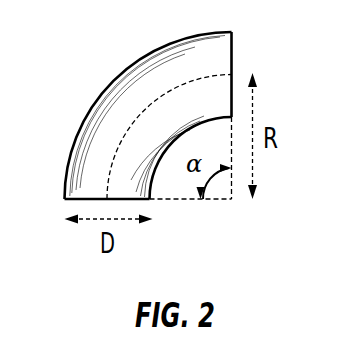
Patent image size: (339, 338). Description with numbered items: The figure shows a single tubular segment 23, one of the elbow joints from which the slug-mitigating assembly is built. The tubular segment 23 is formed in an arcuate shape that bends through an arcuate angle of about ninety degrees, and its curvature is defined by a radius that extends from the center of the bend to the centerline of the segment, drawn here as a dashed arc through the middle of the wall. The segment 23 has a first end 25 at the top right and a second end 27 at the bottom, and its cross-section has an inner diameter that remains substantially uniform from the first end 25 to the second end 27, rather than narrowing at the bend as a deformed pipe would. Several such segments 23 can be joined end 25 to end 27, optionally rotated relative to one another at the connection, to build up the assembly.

The tubular segment 23 is at (156, 50).
The first end 25 is at (232, 50).
The second end 27 is at (82, 199).